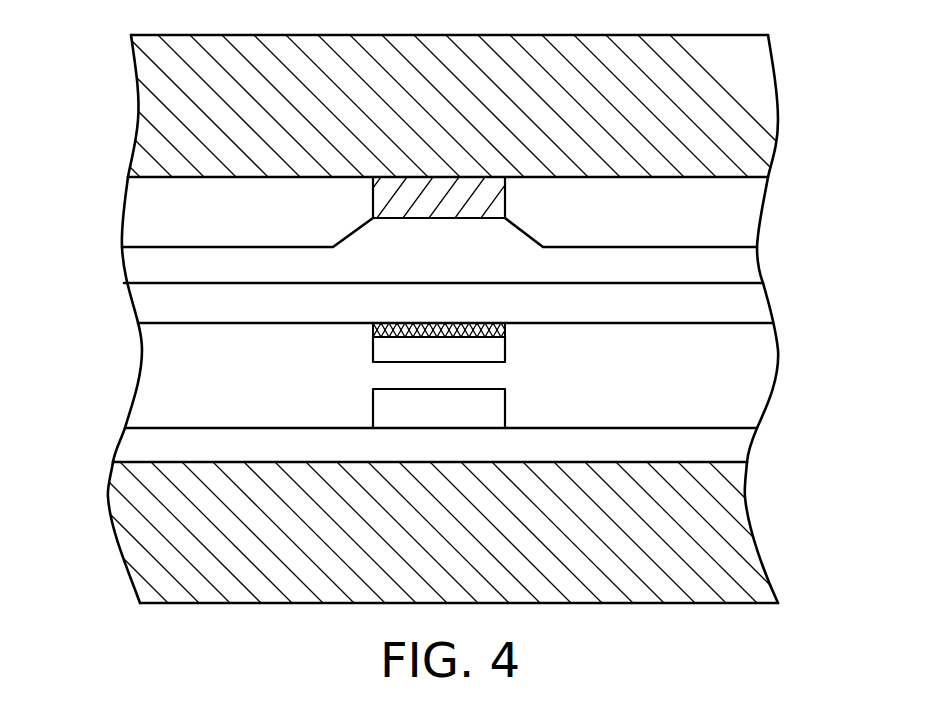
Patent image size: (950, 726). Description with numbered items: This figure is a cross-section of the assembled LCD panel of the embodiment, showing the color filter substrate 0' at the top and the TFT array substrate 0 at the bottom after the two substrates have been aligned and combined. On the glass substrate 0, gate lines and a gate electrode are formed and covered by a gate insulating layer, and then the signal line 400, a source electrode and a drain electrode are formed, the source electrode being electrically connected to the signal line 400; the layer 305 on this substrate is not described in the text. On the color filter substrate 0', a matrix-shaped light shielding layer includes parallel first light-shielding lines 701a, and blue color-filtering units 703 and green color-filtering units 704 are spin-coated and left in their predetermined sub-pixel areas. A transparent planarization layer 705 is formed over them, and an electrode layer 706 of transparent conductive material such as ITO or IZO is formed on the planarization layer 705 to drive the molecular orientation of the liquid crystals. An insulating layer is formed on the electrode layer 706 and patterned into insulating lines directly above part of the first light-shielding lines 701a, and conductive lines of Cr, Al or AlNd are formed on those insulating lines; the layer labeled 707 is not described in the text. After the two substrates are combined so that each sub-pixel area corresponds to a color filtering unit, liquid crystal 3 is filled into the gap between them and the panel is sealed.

The color filter substrate 0' is at (432, 106).
The substrate 0 is at (427, 532).
The first light-shielding lines 701a is at (417, 192).
The blue color-filtering units 703 is at (178, 228).
The green color-filtering units 704 is at (713, 227).
The transparent planarization layer 705 is at (713, 272).
The electrode layer 706 is at (713, 310).
The layer 707 is at (509, 319).
The liquid crystal 3 is at (175, 370).
The signal line 400 is at (402, 407).
The layer 305 is at (708, 448).